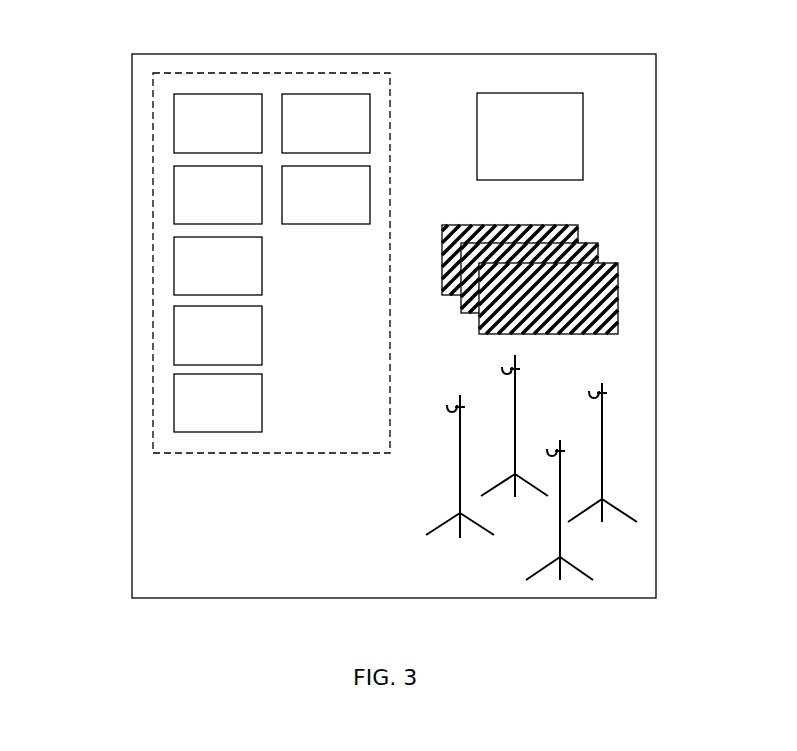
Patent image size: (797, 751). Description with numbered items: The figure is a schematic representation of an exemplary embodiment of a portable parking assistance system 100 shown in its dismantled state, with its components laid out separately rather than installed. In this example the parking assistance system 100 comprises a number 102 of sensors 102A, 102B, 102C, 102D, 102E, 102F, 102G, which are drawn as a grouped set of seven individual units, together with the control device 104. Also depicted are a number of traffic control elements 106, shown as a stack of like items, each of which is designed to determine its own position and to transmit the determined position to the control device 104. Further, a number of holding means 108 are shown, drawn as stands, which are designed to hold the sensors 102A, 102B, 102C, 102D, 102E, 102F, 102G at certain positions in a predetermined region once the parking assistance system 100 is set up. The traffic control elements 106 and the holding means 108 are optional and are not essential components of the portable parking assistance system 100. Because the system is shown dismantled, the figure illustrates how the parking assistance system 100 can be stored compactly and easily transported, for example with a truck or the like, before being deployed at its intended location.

The portable parking assistance system 100 is at (132, 94).
The number of sensors 102 is at (153, 356).
The sensor 102A is at (218, 123).
The sensor 102B is at (218, 195).
The sensor 102C is at (218, 266).
The sensor 102D is at (218, 335).
The sensor 102E is at (218, 403).
The sensor 102F is at (326, 123).
The sensor 102G is at (326, 195).
The control device 104 is at (583, 133).
The traffic control elements 106 is at (633, 302).
The holding means 108 is at (636, 470).